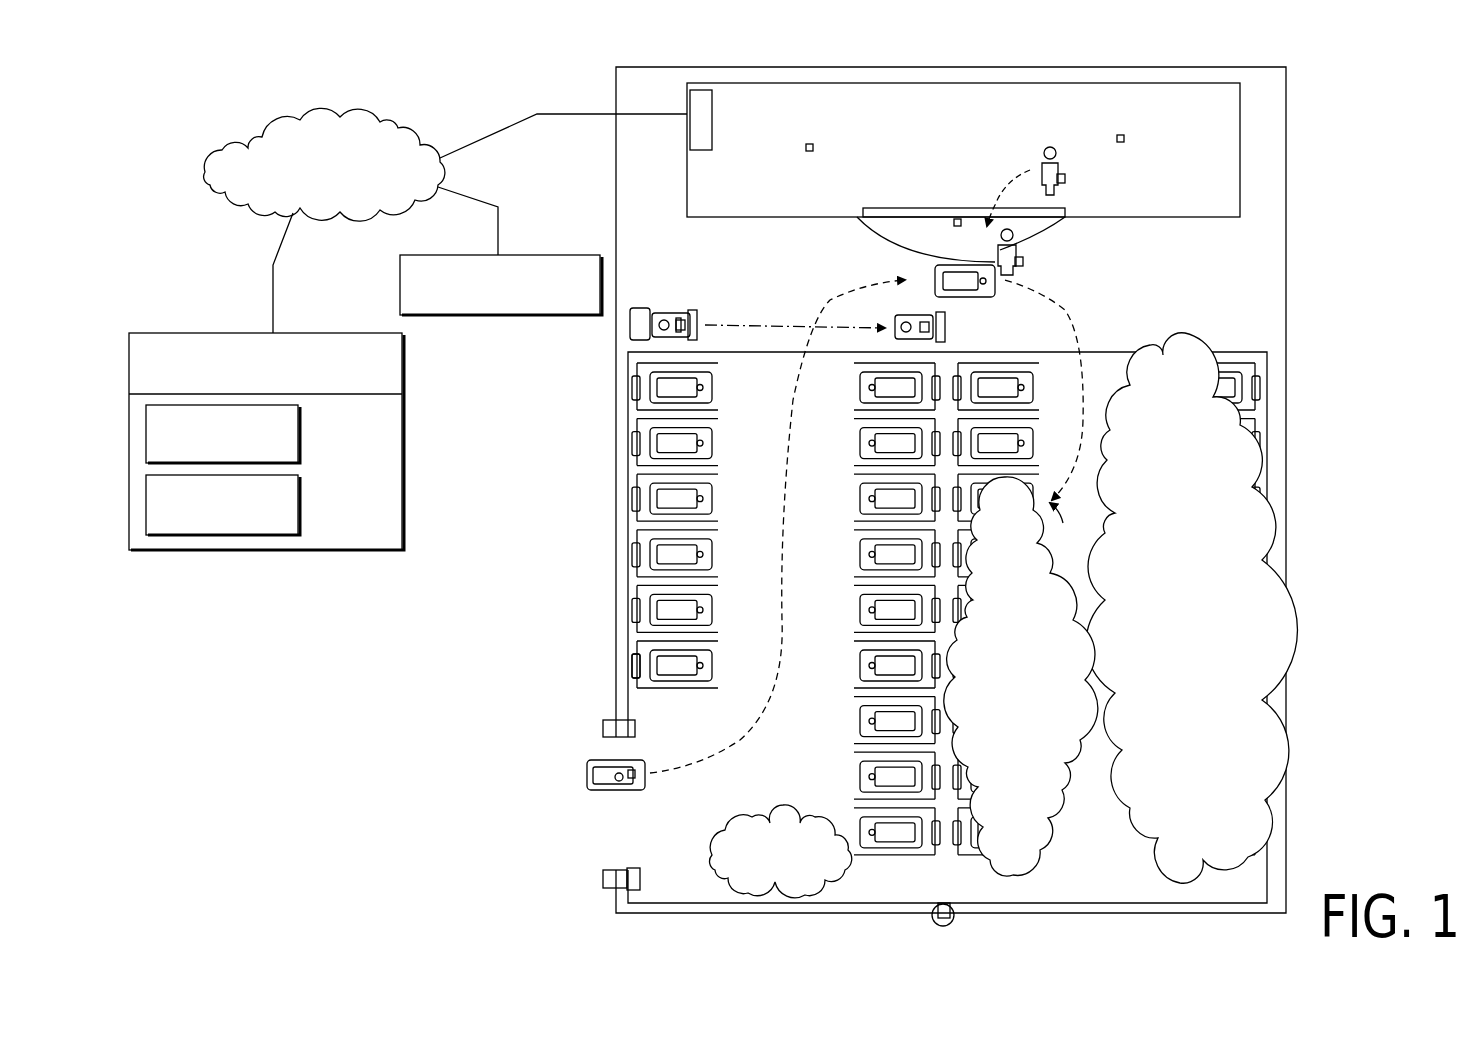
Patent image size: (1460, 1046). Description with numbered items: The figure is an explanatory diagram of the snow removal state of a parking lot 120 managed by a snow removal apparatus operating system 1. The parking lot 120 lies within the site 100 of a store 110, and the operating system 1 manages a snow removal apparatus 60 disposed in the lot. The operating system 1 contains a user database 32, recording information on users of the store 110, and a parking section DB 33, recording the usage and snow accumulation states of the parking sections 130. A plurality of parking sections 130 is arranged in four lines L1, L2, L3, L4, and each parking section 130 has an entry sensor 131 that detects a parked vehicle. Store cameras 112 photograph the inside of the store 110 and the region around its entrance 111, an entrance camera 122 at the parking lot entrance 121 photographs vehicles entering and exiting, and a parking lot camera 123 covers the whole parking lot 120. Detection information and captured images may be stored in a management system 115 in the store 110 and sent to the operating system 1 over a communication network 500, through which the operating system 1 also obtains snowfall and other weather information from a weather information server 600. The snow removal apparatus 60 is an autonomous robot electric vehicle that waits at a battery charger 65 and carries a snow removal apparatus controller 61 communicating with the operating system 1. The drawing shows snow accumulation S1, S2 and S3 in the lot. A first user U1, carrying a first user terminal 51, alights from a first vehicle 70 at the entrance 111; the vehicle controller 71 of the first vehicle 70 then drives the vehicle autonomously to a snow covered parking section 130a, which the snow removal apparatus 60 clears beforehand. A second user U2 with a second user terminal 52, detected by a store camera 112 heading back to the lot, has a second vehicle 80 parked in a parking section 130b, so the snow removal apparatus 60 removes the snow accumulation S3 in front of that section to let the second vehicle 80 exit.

The snow removal apparatus operating system 1 is at (242, 441).
The user database 32 is at (300, 436).
The parking section DB 33 is at (300, 501).
The communication network 500 is at (366, 122).
The weather information server 600 is at (533, 254).
The site 100 is at (1290, 246).
The store 110 is at (1148, 218).
The entrance 111 is at (877, 238).
The store camera 112 is at (810, 143).
The management system 115 is at (707, 153).
The parking lot 120 is at (1232, 352).
The entrance 121 is at (627, 841).
The entrance camera 122 is at (642, 880).
The parking lot camera 123 is at (955, 920).
The parking section 130 is at (730, 650).
The parking section 130a is at (1071, 527).
The parking section 130b is at (871, 837).
The entry sensor 131 is at (641, 678).
The first user terminal 51 is at (1024, 260).
The second user terminal 52 is at (1068, 178).
The snow removal apparatus 60 is at (822, 312).
The snow removal apparatus controller 61 is at (680, 335).
The battery charger 65 is at (640, 308).
The first vehicle 70 is at (780, 542).
The vehicle controller 71 is at (640, 782).
The second vehicle 80 is at (862, 858).
The first user U1 is at (1015, 240).
The second user U2 is at (1049, 146).
The line L1 is at (702, 552).
The line L2 is at (871, 630).
The line L3 is at (975, 864).
The line L4 is at (1252, 866).
The snow accumulation S1 is at (1233, 636).
The snow accumulation S2 is at (1052, 818).
The snow accumulation S3 is at (784, 805).